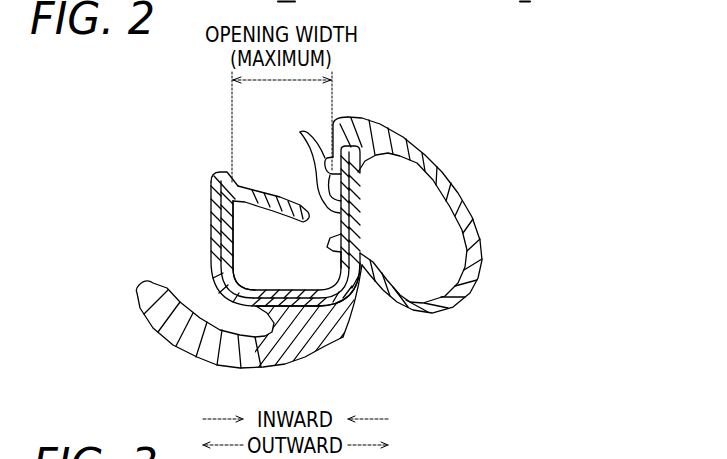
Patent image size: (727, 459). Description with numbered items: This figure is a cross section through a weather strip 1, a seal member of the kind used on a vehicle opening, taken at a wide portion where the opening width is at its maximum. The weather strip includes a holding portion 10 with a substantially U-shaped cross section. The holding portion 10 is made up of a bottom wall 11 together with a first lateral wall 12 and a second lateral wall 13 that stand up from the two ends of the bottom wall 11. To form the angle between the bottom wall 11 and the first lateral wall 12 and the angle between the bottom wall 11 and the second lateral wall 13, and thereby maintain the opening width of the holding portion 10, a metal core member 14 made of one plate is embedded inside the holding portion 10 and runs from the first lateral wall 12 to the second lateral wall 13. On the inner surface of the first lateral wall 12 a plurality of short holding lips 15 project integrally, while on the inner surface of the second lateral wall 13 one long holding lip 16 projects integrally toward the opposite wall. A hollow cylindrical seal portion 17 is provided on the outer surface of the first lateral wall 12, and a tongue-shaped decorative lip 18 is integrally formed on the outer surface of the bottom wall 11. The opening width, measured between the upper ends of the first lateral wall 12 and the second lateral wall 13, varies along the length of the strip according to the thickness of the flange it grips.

The weather strip 1 is at (414, 103).
The holding portion 10 is at (217, 147).
The bottom wall 11 is at (287, 289).
The first lateral wall 12 is at (361, 219).
The second lateral wall 13 is at (211, 222).
The metal core member 14 is at (338, 297).
The holding lips 15 is at (300, 132).
The holding lip 16 is at (263, 197).
The hollow cylindrical seal portion 17 is at (465, 178).
The decorative lip 18 is at (231, 350).